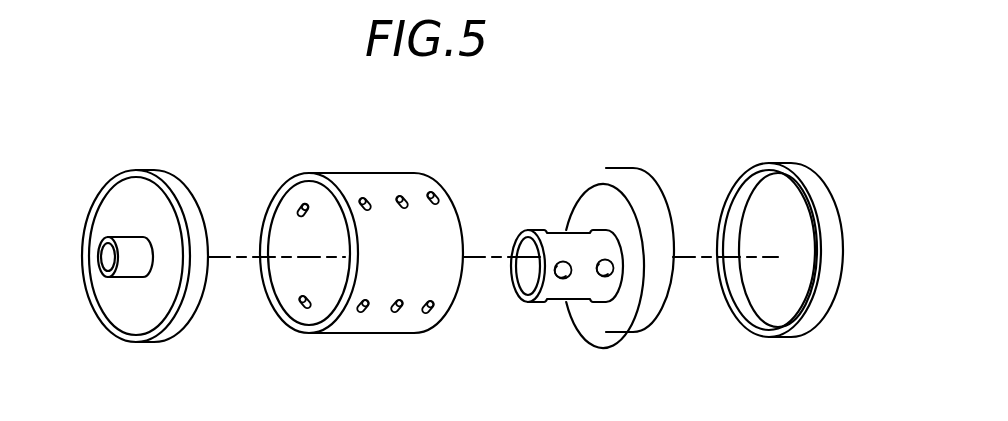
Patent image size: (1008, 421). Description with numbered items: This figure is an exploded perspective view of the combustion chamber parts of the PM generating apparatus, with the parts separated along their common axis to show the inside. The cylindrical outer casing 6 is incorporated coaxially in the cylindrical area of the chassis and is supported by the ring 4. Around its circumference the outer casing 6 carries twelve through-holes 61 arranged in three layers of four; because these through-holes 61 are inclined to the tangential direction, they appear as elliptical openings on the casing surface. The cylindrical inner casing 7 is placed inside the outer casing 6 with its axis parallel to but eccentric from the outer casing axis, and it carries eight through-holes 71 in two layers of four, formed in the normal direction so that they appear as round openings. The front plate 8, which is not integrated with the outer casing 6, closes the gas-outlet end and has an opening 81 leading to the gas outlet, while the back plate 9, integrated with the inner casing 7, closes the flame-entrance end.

The ring 4 is at (800, 170).
The outer casing 6 is at (372, 185).
The through-holes 61 is at (407, 197).
The inner casing 7 is at (548, 235).
The through-holes 71 is at (603, 278).
The front plate 8 is at (177, 190).
The opening 81 is at (105, 263).
The back plate 9 is at (598, 182).